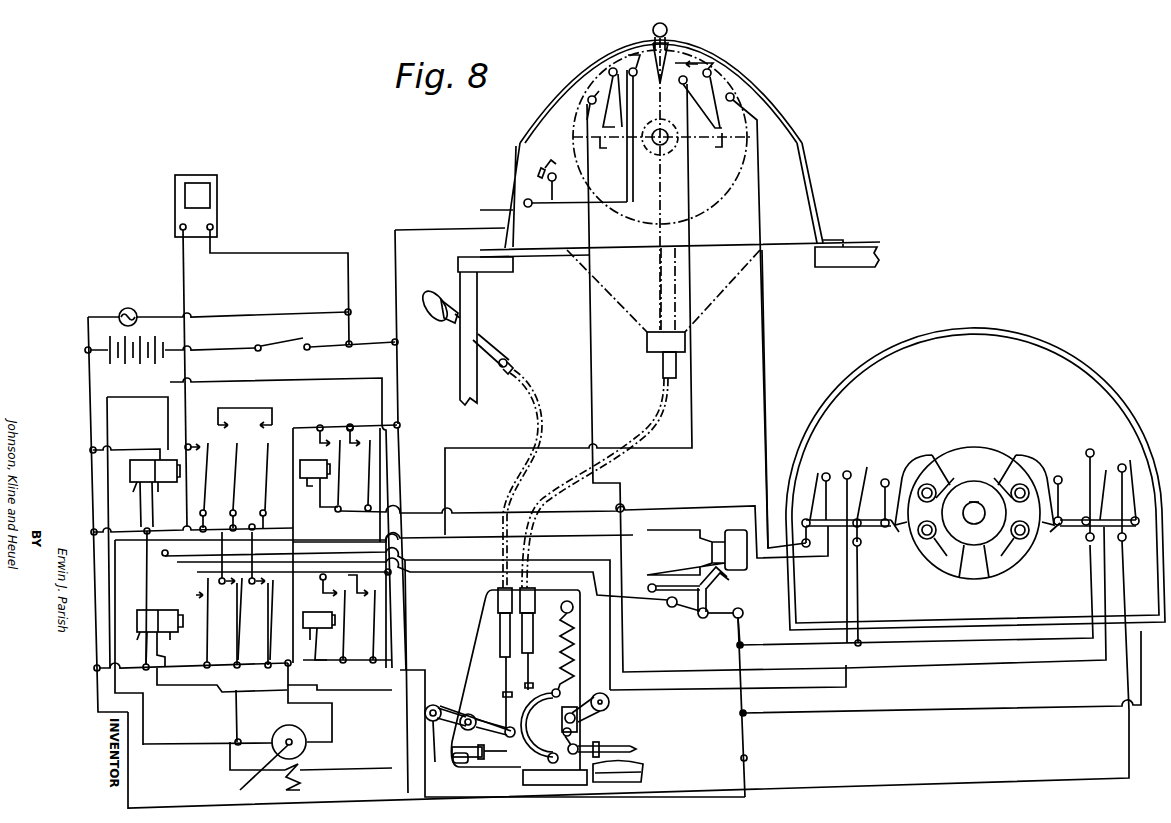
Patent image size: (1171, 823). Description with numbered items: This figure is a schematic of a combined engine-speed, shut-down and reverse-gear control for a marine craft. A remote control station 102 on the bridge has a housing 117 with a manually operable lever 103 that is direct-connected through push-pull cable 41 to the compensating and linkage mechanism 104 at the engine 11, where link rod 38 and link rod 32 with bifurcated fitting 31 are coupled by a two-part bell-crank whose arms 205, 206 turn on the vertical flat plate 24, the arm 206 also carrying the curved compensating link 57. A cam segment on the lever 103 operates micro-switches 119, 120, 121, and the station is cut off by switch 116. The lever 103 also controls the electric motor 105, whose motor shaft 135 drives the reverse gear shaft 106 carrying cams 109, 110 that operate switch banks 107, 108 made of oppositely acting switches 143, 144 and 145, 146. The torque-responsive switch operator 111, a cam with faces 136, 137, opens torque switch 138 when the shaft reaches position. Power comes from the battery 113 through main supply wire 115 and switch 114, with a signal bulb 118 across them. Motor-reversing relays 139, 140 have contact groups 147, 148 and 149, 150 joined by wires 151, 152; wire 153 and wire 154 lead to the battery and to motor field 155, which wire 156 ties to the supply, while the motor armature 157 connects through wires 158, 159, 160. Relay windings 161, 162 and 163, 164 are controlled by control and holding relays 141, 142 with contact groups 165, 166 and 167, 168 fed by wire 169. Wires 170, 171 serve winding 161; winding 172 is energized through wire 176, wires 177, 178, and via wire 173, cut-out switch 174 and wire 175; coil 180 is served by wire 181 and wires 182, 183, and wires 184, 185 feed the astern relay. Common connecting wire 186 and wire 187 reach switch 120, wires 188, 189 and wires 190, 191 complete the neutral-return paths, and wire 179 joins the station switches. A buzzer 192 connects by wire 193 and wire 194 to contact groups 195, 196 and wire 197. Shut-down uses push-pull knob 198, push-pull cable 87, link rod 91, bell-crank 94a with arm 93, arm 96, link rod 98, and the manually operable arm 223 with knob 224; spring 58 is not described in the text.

The engine 11 is at (640, 760).
The vertical flat plate 24 is at (475, 648).
The bifurcated fitting 31 is at (590, 745).
The link rod 32 is at (625, 746).
The link rod 38 is at (533, 672).
The push-pull cable 41 is at (644, 411).
The curved compensating link 57 is at (544, 780).
The spring 58 is at (575, 640).
The push-pull cable 87 is at (540, 392).
The link rod 91 is at (505, 668).
The bell-crank arm 93 is at (510, 738).
The bell-crank 94a is at (490, 705).
The bell-crank arm 96 is at (468, 744).
The link rod 98 is at (492, 765).
The remote control station 102 is at (473, 138).
The manually operable lever 103 is at (700, 65).
The compensating and linkage mechanism 104 is at (464, 620).
The electric motor 105 is at (320, 772).
The reverse gear shaft 106 is at (972, 513).
The switch bank 107 is at (847, 444).
The switch bank 108 is at (1082, 443).
The cam 109 is at (915, 455).
The cam 110 is at (1032, 455).
The torque-responsive switch operator 111 is at (749, 582).
The battery 113 is at (143, 379).
The switch 114 is at (290, 337).
The main supply wire 115 is at (220, 340).
The switch 116 is at (530, 200).
The housing 117 is at (523, 204).
The signal bulb 118 is at (136, 308).
The micro-switch 119 is at (588, 100).
The micro-switch 120 is at (735, 98).
The micro-switch 121 is at (722, 85).
The motor shaft 135 is at (260, 773).
The cam face 136 is at (710, 530).
The cam face 137 is at (725, 512).
The torque switch 138 is at (670, 618).
The motor-reversing relay 139 is at (147, 432).
The motor-reversing relay 140 is at (148, 606).
The control and holding relay 141 is at (311, 444).
The control and holding relay 142 is at (321, 606).
The switch 143 is at (822, 459).
The switch 144 is at (866, 452).
The switch 145 is at (1082, 452).
The switch 146 is at (1125, 453).
The contact group 147 is at (233, 442).
The contact group 148 is at (264, 442).
The contact group 149 is at (234, 598).
The contact group 150 is at (267, 589).
The wire 151 is at (228, 508).
The wire 152 is at (259, 508).
The wire 153 is at (88, 395).
The wire 154 is at (228, 716).
The motor field 155 is at (303, 783).
The wire 156 is at (403, 725).
The motor armature 157 is at (286, 725).
The wire 158 is at (335, 713).
The wire 159 is at (180, 752).
The wire 160 is at (239, 700).
The winding 161 is at (167, 504).
The winding 162 is at (125, 504).
The winding 163 is at (174, 649).
The winding 164 is at (129, 648).
The contact group 165 is at (343, 426).
The contact group 166 is at (361, 451).
The contact group 167 is at (343, 587).
The contact group 168 is at (376, 583).
The wire 169 is at (300, 532).
The wire 170 is at (129, 446).
The wire 171 is at (290, 384).
The winding 172 is at (332, 478).
The wire 173 is at (738, 655).
The cut-out switch 174 is at (750, 740).
The wire 175 is at (700, 790).
The wire 176 is at (455, 575).
The wire 177 is at (340, 512).
The wire 178 is at (765, 424).
The wire 179 is at (672, 40).
The coil 180 is at (313, 644).
The wire 181 is at (378, 692).
The wire 182 is at (472, 632).
The wire 183 is at (1005, 706).
The wire 184 is at (623, 740).
The wire 185 is at (200, 684).
The common connecting wire 186 is at (170, 573).
The wire 187 is at (440, 548).
The wire 188 is at (147, 512).
The wire 189 is at (997, 640).
The wire 190 is at (590, 556).
The wire 191 is at (862, 585).
The buzzer 192 is at (229, 205).
The wire 193 is at (266, 250).
The wire 194 is at (190, 281).
The contact group 195 is at (206, 435).
The contact group 196 is at (197, 623).
The wire 197 is at (178, 668).
The push-pull knob 198 is at (433, 289).
The bell-crank arm 205 is at (577, 700).
The bell-crank arm 206 is at (578, 732).
The manually operable arm 223 is at (452, 708).
The knob 224 is at (442, 755).